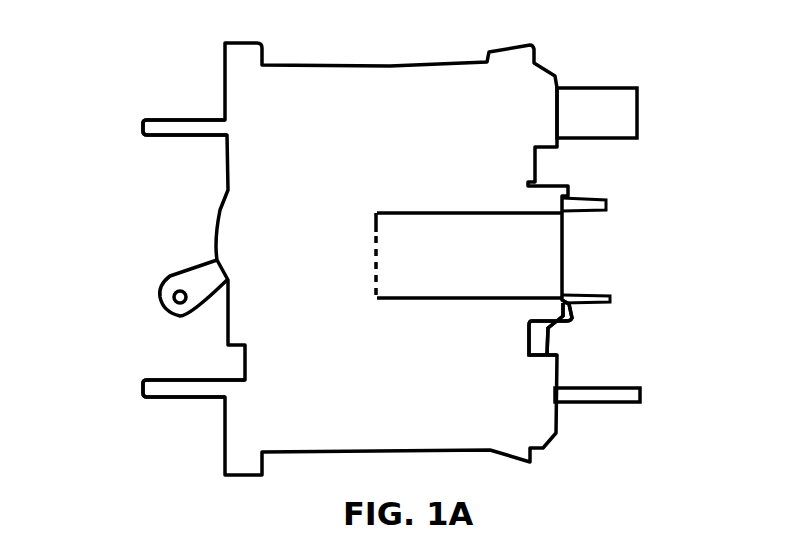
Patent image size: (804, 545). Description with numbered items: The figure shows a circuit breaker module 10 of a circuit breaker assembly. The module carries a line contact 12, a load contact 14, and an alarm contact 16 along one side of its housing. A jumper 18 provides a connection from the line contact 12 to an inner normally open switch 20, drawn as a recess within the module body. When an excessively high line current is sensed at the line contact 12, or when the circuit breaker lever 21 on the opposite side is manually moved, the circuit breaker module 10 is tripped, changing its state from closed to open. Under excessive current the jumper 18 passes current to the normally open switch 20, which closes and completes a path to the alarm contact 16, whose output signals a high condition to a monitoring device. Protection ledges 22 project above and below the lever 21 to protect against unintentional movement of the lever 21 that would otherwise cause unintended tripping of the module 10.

The circuit breaker module 10 is at (125, 168).
The line contact 12 is at (640, 398).
The load contact 14 is at (623, 85).
The alarm contact 16 is at (607, 207).
The jumper 18 is at (573, 326).
The inner normally open switch 20 is at (375, 297).
The circuit breaker lever 21 is at (160, 296).
The protection ledges 22 is at (154, 128).